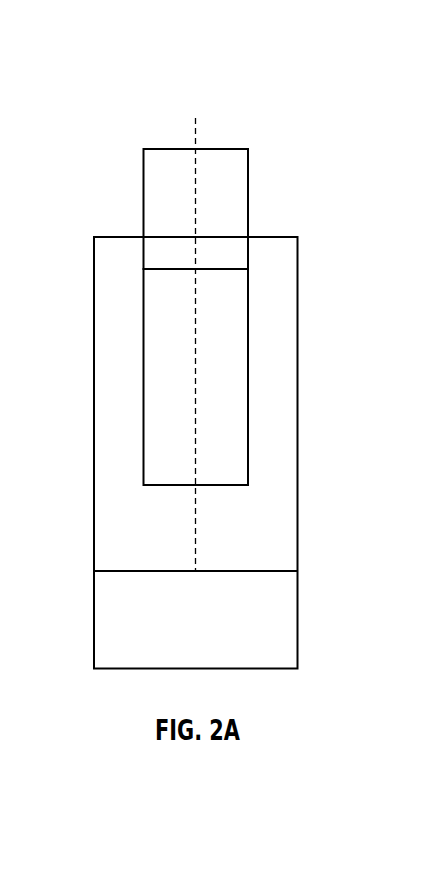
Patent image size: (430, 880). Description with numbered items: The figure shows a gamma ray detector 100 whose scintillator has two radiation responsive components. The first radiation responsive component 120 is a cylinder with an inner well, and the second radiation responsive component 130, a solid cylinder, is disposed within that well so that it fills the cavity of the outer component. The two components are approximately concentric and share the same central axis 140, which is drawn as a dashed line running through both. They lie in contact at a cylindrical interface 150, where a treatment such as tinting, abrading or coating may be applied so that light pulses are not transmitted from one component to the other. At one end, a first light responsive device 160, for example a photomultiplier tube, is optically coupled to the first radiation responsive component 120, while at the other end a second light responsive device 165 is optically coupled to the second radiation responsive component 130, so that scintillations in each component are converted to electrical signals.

The gamma ray detector 100 is at (329, 97).
The first radiation responsive component 120 is at (93, 445).
The second radiation responsive component 130 is at (143, 380).
The central axis 140 is at (195, 137).
The cylindrical interface 150 is at (250, 379).
The first light responsive device 160 is at (213, 630).
The second light responsive device 165 is at (248, 188).